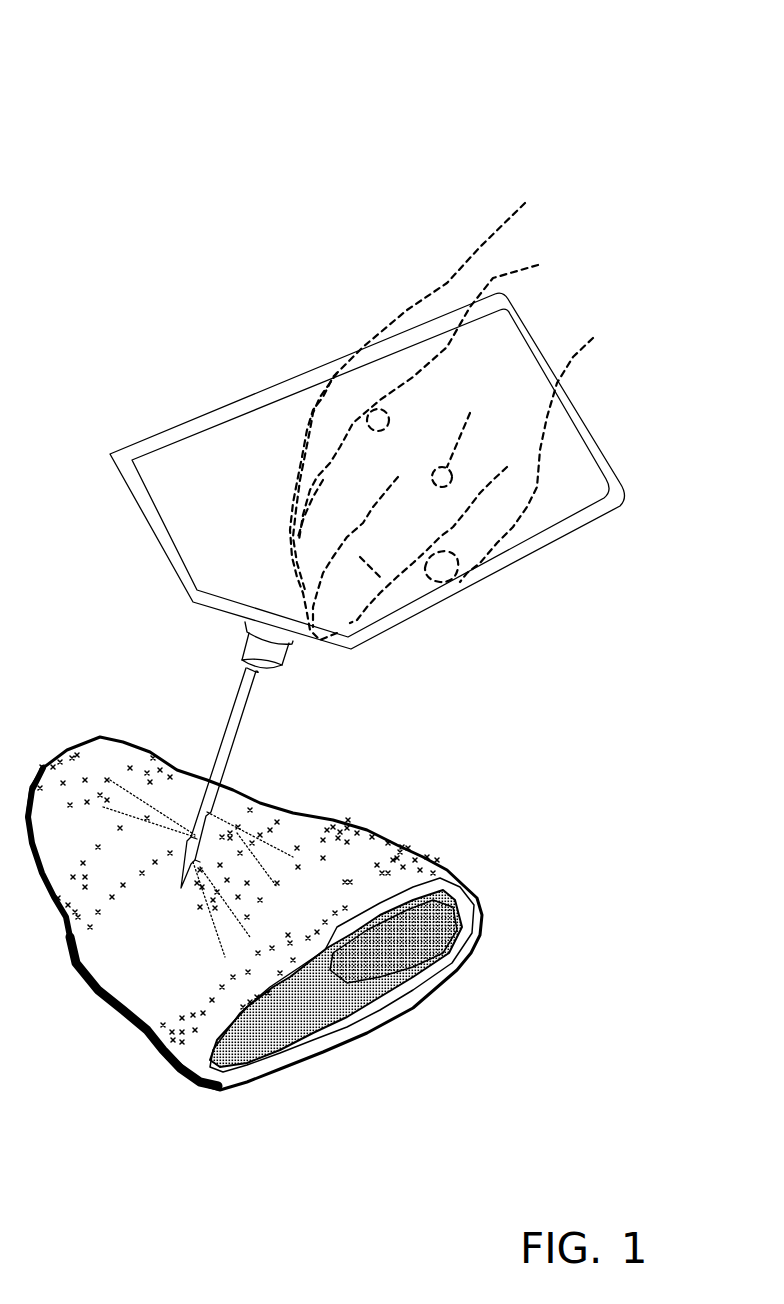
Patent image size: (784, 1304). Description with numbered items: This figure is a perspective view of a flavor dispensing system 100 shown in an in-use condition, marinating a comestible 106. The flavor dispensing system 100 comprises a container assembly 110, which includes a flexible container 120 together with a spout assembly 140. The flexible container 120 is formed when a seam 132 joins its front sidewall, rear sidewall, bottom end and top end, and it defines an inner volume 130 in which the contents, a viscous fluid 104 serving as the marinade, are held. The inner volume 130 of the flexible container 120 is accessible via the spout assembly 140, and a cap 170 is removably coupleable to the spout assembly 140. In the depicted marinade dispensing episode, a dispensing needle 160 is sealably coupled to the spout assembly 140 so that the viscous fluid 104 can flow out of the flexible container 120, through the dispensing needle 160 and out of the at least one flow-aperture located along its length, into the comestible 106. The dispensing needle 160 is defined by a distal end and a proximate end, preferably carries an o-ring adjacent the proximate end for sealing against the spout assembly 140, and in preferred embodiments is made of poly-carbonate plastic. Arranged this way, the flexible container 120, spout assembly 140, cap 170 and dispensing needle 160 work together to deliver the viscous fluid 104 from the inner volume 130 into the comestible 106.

The flavor dispensing system 100 is at (571, 118).
The viscous fluid 104 is at (262, 422).
The comestible 106 is at (488, 911).
The container assembly 110 is at (610, 391).
The flexible container 120 is at (207, 493).
The inner volume 130 is at (198, 450).
The seam 132 is at (600, 454).
The spout assembly 140 is at (242, 627).
The dispensing needle 160 is at (217, 745).
The cap 170 is at (282, 663).